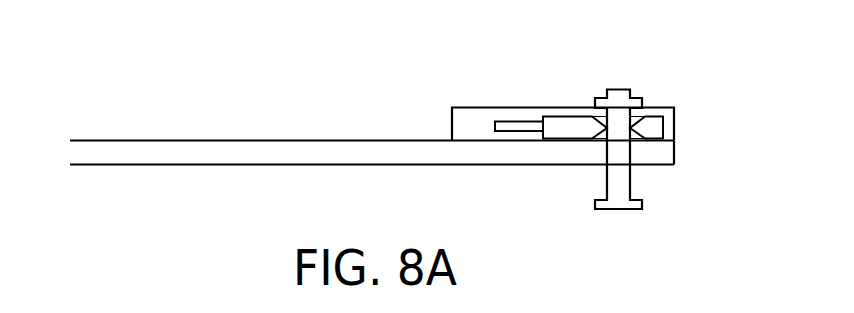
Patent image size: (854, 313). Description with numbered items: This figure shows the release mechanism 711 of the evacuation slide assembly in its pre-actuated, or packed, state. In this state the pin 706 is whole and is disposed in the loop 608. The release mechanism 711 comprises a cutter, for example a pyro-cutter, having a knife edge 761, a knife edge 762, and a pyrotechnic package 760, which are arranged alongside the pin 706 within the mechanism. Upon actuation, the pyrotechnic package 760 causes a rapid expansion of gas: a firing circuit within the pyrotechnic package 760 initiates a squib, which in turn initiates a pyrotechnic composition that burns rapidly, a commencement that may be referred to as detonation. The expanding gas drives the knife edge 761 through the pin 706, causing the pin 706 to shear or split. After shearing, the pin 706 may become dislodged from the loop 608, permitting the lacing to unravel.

The loop 608 is at (398, 140).
The pyrotechnic package 760 is at (512, 117).
The knife edge 761 is at (572, 117).
The pin 706 is at (592, 103).
The knife edge 762 is at (660, 112).
The release mechanism 711 is at (700, 105).